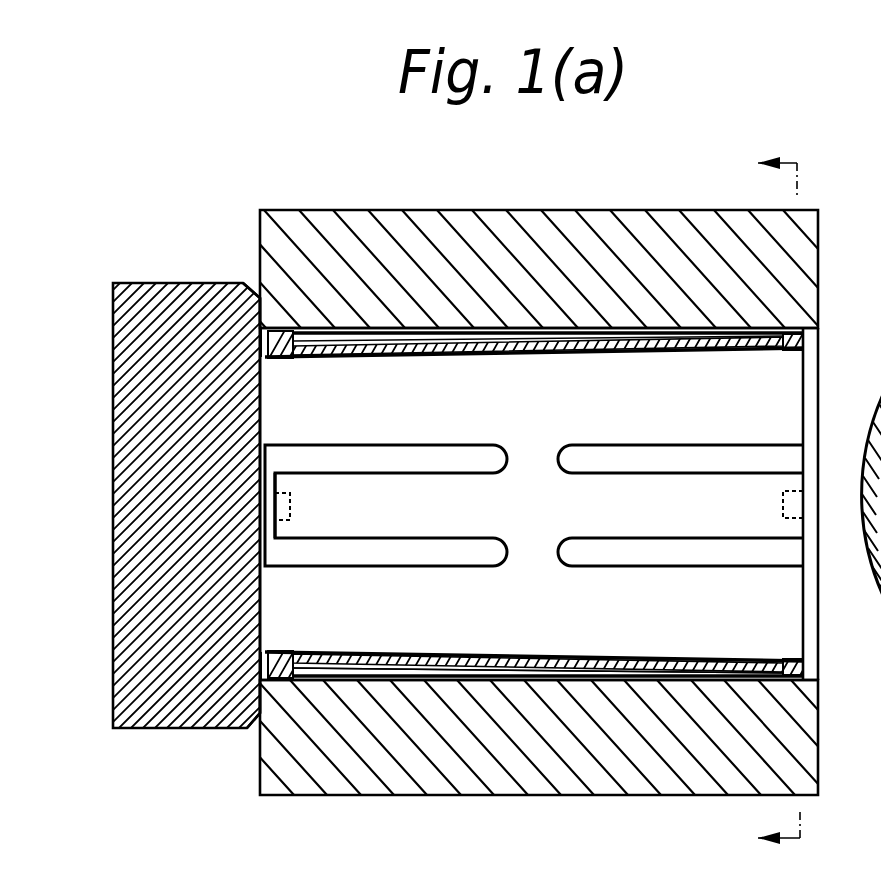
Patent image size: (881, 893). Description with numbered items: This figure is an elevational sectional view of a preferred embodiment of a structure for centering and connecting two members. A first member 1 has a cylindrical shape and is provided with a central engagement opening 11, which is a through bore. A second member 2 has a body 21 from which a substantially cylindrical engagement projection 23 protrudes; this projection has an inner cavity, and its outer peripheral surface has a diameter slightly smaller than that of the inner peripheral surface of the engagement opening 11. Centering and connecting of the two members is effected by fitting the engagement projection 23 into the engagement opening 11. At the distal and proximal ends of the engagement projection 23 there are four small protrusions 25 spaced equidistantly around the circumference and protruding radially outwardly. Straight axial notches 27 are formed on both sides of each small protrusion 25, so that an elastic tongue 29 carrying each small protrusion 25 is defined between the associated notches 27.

The first member 1 is at (519, 200).
The engagement opening 11 is at (677, 330).
The second member 2 is at (152, 279).
The body 21 is at (207, 283).
The engagement projection 23 is at (783, 378).
The small protrusions 25 is at (282, 334).
The axial notches 27 is at (415, 453).
The elastic tongue 29 is at (353, 487).